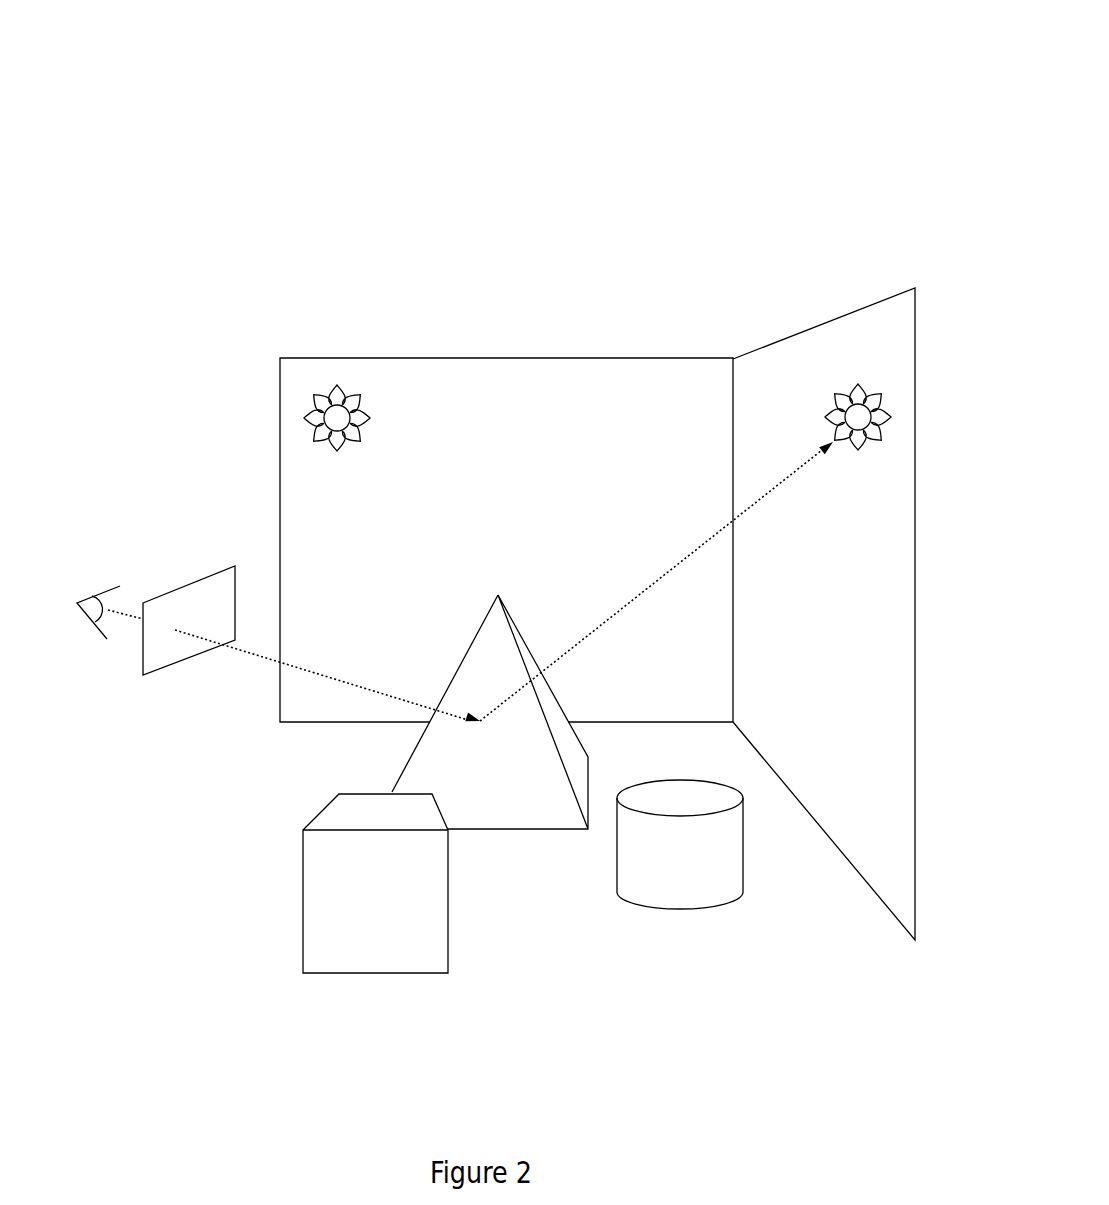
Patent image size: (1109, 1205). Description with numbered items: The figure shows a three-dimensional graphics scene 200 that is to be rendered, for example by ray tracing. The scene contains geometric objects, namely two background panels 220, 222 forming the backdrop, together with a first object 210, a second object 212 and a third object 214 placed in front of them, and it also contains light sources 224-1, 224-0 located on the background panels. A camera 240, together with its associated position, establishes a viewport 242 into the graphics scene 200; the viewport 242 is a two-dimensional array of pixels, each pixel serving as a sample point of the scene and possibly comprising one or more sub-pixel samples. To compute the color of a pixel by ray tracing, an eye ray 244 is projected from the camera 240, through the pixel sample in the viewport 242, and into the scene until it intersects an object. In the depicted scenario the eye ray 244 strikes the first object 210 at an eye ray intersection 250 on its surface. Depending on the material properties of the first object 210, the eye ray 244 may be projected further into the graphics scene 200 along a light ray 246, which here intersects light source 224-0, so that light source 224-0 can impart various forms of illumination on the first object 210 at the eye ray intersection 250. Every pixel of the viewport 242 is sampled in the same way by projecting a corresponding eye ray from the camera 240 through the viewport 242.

The graphics scene 200 is at (790, 123).
The background panel 220 is at (463, 358).
The background panel 222 is at (777, 342).
The light source 224-1 is at (312, 403).
The light source 224-0 is at (833, 393).
The viewport 242 is at (195, 582).
The camera 240 is at (92, 598).
The eye ray 244 is at (248, 655).
The light ray 246 is at (687, 553).
The eye ray intersection 250 is at (480, 722).
The object 1 210 is at (420, 740).
The object 2 212 is at (332, 976).
The object 3 214 is at (700, 910).